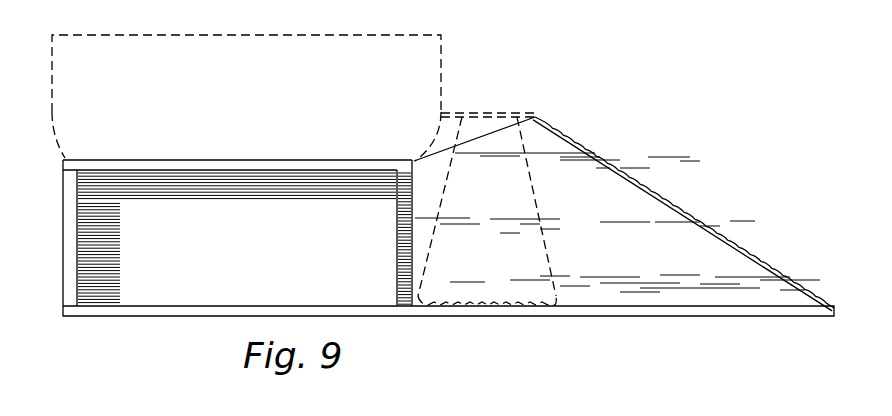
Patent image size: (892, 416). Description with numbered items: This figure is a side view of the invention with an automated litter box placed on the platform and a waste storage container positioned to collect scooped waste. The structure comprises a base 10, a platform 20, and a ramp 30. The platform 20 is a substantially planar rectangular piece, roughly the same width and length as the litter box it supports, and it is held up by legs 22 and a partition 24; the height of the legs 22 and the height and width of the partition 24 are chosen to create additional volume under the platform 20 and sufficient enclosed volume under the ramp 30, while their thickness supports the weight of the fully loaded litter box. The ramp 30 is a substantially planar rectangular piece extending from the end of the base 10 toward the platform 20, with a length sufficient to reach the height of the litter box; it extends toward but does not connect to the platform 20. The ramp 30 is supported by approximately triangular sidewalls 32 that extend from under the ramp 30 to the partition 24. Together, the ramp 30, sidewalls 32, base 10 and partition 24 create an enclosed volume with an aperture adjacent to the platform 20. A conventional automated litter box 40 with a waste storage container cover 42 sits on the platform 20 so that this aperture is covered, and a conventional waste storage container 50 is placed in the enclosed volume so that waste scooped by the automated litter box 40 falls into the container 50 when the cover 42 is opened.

The base 10 is at (160, 308).
The platform 20 is at (177, 165).
The legs 22 is at (70, 226).
The partition 24 is at (405, 232).
The ramp 30 is at (632, 177).
The sidewalls 32 is at (585, 275).
The automated litter box 40 is at (205, 68).
The waste storage container cover 42 is at (490, 115).
The waste storage container 50 is at (487, 270).